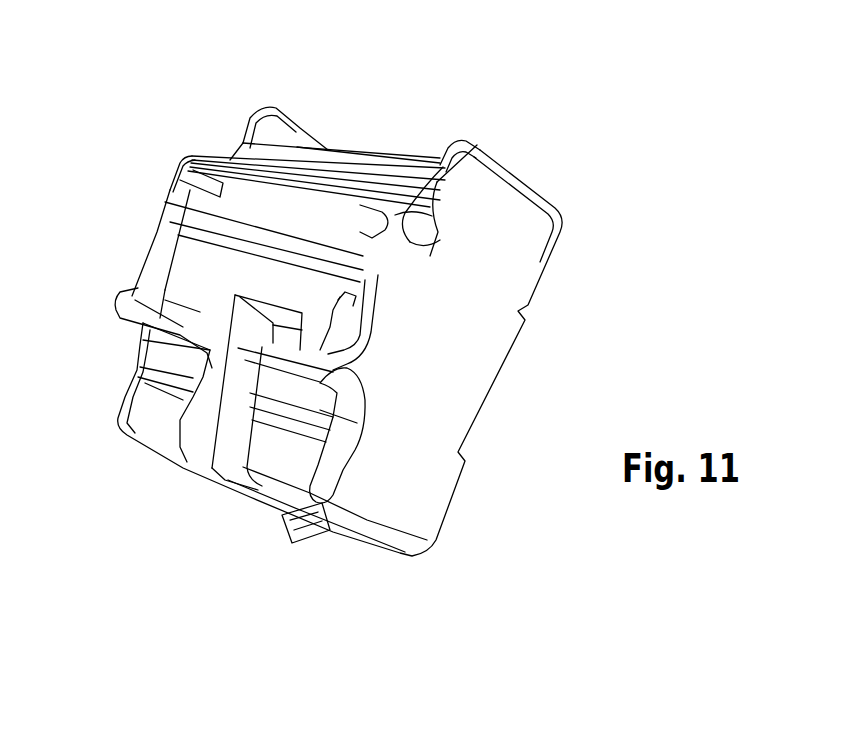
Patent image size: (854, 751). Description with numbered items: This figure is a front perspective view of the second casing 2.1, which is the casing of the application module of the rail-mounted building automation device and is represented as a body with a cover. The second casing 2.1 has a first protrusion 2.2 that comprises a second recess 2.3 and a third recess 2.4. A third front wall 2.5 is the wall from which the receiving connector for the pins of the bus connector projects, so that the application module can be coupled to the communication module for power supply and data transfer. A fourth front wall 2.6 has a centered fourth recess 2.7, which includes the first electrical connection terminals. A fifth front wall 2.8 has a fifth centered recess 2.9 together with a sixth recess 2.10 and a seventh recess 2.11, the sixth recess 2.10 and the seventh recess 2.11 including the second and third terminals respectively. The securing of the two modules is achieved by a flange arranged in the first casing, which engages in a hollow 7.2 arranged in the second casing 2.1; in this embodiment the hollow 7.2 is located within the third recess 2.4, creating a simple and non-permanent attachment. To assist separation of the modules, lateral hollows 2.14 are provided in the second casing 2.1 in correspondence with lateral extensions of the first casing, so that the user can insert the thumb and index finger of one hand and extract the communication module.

The second casing 2.1 is at (538, 322).
The first protrusion 2.2 is at (402, 210).
The second recess 2.3 is at (373, 218).
The third recess 2.4 is at (315, 312).
The third front wall 2.5 is at (195, 257).
The fourth front wall 2.6 is at (443, 158).
The fourth recess 2.7 is at (275, 125).
The fifth front wall 2.8 is at (252, 447).
The fifth recess 2.9 is at (227, 423).
The sixth recess 2.10 is at (302, 450).
The seventh recess 2.11 is at (158, 418).
The lateral hollows 2.14 is at (142, 245).
The hollow 7.2 is at (287, 252).